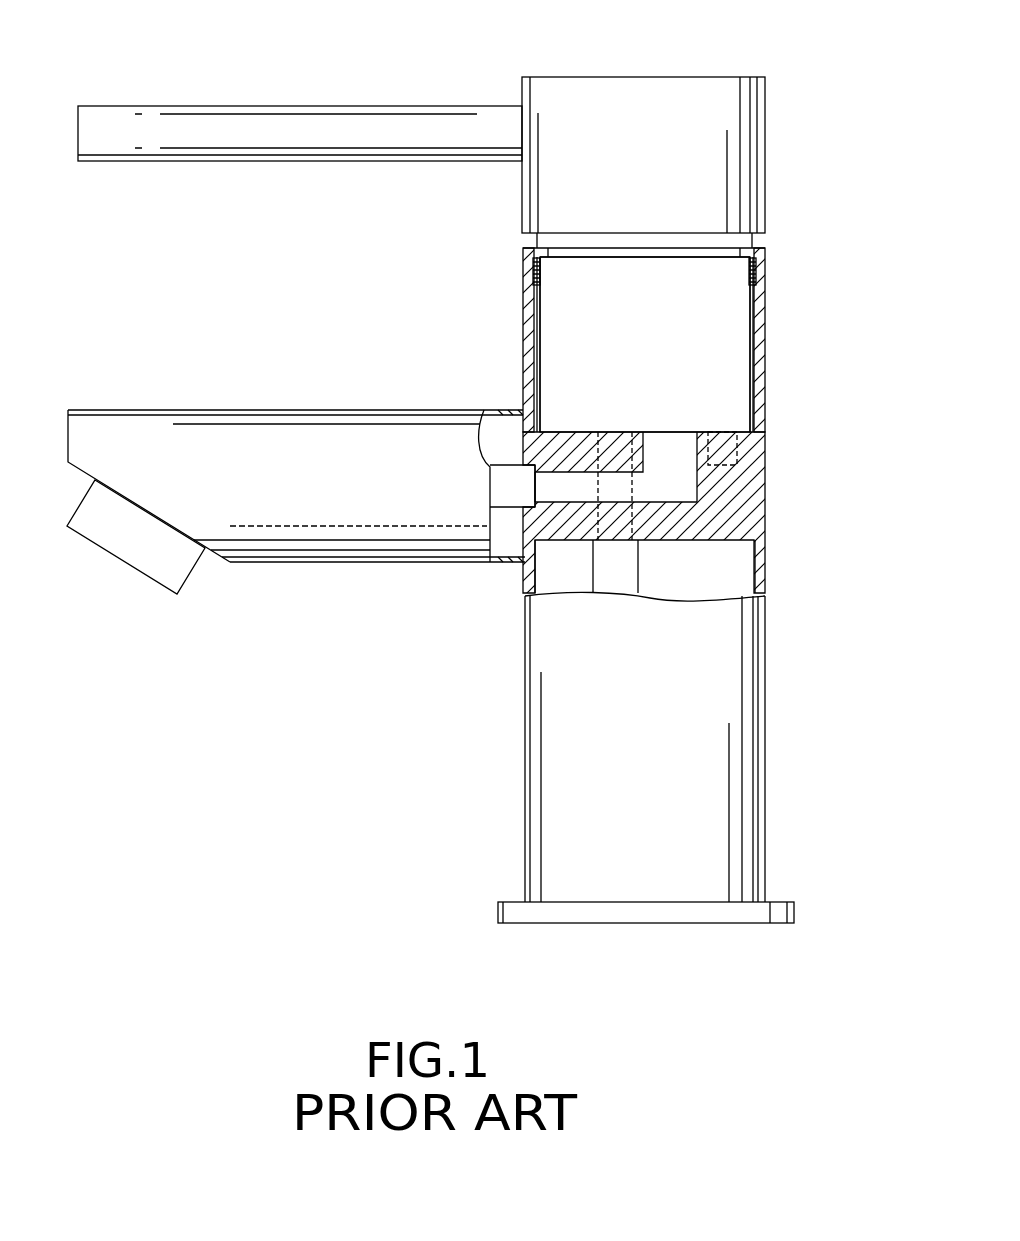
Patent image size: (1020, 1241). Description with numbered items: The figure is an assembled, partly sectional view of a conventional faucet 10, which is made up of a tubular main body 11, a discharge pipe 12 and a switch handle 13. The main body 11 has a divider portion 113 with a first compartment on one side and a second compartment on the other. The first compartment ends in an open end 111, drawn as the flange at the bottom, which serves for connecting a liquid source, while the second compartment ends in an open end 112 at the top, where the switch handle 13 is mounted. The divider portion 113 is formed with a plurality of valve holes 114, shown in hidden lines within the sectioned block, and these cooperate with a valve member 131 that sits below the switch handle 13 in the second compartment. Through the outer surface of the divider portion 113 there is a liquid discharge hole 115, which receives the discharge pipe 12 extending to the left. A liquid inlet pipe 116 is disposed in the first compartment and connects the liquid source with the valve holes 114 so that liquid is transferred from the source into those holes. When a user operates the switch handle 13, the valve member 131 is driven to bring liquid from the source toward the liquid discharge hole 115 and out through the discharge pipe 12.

The faucet 10 is at (798, 640).
The tubular main body 11 is at (745, 757).
The open end 111 is at (650, 925).
The open end 112 is at (758, 312).
The divider portion 113 is at (740, 502).
The valve holes 114 is at (600, 513).
The liquid discharge hole 115 is at (555, 483).
The liquid inlet pipe 116 is at (602, 570).
The discharge pipe 12 is at (312, 425).
The switch handle 13 is at (652, 97).
The valve member 131 is at (730, 378).